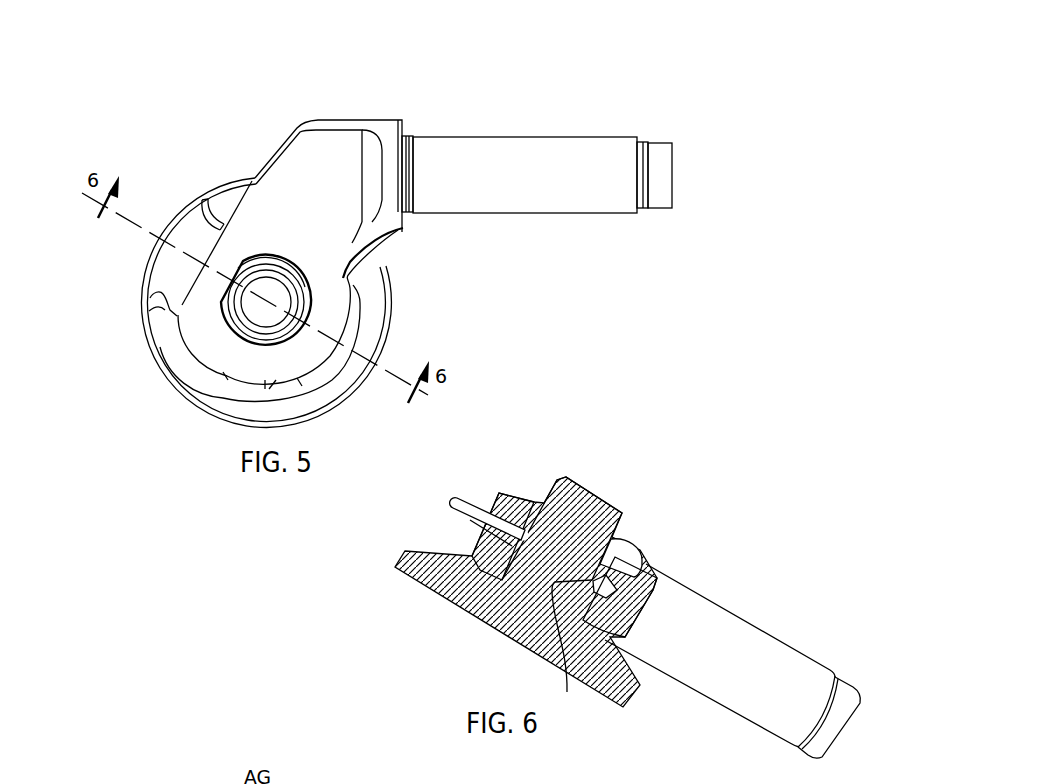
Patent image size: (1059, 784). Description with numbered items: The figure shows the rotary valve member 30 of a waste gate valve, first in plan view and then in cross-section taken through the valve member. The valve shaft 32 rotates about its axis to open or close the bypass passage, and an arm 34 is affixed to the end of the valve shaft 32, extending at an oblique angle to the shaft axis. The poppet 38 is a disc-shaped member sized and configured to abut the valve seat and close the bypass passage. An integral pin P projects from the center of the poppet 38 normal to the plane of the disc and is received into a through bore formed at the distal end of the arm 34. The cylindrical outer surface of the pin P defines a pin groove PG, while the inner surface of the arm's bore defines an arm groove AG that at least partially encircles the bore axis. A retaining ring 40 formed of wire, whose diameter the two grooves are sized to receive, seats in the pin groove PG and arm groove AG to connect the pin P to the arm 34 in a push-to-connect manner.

In FIG. 5, the tool assembly 30 is at (160, 118).
In FIG. 5, the valve shaft 32 is at (481, 153).
In FIG. 6, the valve shaft 32 is at (712, 602).
In FIG. 5, the arm 34 is at (262, 206).
In FIG. 6, the arm 34 is at (515, 505).
In FIG. 5, the poppet 38 is at (207, 386).
In FIG. 6, the poppet 38 is at (428, 555).
In FIG. 5, the retaining ring 40 is at (160, 303).
In FIG. 6, the retaining ring 40 is at (476, 510).
In FIG. 5, the pin P is at (282, 296).
In FIG. 6, the pin P is at (584, 508).
In FIG. 6, the pin groove PG is at (586, 643).
In FIG. 6, the arm groove AG is at (643, 592).